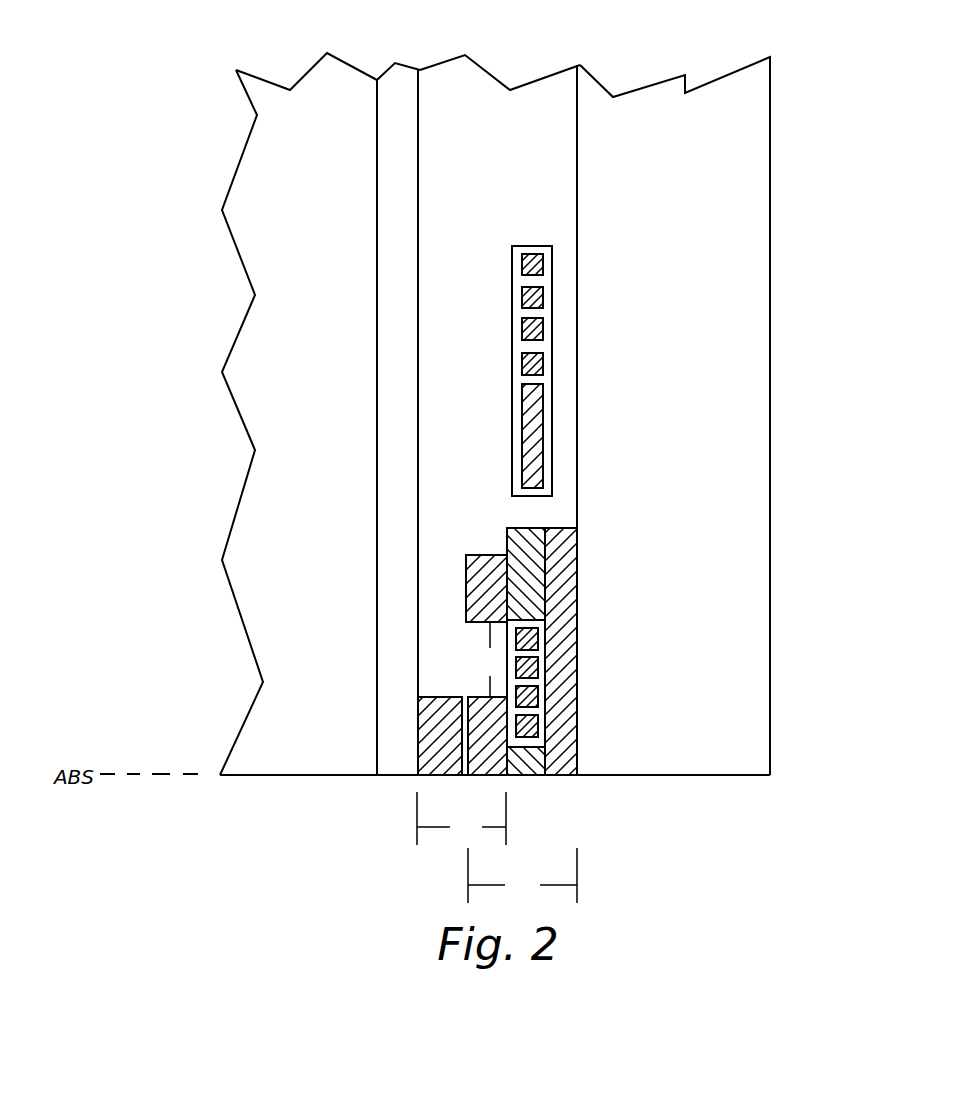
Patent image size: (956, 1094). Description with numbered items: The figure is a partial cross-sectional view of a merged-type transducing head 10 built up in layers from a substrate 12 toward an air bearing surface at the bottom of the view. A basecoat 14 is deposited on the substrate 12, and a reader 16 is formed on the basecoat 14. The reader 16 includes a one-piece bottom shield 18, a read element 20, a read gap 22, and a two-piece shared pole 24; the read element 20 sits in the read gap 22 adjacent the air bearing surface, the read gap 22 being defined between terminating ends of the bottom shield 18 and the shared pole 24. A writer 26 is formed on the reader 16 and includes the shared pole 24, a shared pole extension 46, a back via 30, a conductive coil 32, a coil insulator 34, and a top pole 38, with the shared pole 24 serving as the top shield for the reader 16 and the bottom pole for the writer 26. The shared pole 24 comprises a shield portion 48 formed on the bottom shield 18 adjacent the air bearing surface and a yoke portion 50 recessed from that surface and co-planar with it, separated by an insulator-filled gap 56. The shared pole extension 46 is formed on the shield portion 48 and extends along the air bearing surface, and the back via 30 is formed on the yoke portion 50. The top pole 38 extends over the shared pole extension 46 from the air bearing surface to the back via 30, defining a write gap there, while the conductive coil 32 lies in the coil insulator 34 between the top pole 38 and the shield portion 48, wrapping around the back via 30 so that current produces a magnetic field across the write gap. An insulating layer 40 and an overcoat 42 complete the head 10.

The transducing head 10 is at (200, 72).
The substrate 12 is at (268, 538).
The basecoat 14 is at (402, 372).
The reader 16 is at (461, 818).
The bottom shield 18 is at (433, 710).
The read element 20 is at (462, 776).
The read gap 22 is at (460, 740).
The shared pole 24 is at (473, 595).
The writer 26 is at (522, 875).
The back via 30 is at (510, 530).
The conductive coil 32 is at (540, 368).
The coil insulator 34 is at (546, 683).
The top pole 38 is at (560, 722).
The insulating layer 40 is at (475, 93).
The overcoat 42 is at (745, 388).
The shared pole extension 46 is at (540, 758).
The shield portion 48 is at (490, 778).
The yoke portion 50 is at (473, 556).
The gap 56 is at (482, 659).